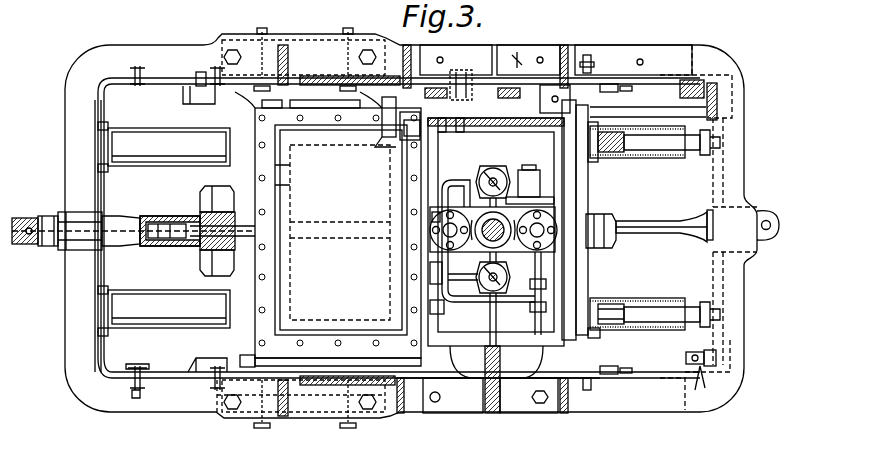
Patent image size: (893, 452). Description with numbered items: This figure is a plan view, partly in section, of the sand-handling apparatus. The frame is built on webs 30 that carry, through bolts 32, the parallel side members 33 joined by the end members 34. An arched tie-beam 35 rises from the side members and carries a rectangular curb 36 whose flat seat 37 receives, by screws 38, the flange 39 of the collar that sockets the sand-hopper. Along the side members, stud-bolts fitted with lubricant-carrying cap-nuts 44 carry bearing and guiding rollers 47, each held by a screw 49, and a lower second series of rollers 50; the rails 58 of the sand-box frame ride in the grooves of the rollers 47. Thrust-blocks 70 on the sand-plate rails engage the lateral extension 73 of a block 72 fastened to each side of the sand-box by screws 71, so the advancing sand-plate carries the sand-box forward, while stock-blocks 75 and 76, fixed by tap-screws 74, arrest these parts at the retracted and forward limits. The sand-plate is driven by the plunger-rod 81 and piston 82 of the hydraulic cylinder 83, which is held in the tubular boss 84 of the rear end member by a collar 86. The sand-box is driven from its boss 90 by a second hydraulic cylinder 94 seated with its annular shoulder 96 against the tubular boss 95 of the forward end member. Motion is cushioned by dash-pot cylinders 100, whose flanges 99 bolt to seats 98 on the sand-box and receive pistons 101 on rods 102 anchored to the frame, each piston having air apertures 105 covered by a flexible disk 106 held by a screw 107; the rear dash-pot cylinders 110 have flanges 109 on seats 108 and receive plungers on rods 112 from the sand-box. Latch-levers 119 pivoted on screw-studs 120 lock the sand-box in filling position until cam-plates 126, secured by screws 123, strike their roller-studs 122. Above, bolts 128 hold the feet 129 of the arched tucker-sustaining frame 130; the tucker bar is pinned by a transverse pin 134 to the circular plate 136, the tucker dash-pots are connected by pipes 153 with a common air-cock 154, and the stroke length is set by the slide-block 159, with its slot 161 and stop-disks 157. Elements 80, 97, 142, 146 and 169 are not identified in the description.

The webs 30 is at (240, 98).
The bolts 32 is at (232, 412).
The side members 33 is at (180, 93).
The end members 34 is at (80, 278).
The arched tie-beam 35 is at (338, 362).
The rectangular curb 36 is at (325, 100).
The flat seat 37 is at (266, 432).
The screws 38 is at (282, 267).
The flange 39 is at (282, 205).
The cap-nut 44 is at (265, 29).
The bearing and guiding roller 47 is at (146, 370).
The screw 49 is at (135, 372).
The guiding and supporting rollers 50 is at (273, 101).
The rails 58 is at (246, 362).
The thrust-blocks 70 is at (386, 100).
The screws 71 is at (466, 127).
The block 72 is at (444, 127).
The lateral extension 73 is at (436, 86).
The tap-screws 74 is at (465, 64).
The stock-block 75 is at (192, 104).
The stock-block 76 is at (515, 98).
The plate 80 is at (283, 182).
The plunger-rod 81 is at (200, 218).
The piston 82 is at (166, 218).
The hydraulic cylinder 83 is at (49, 246).
The tubular boss 84 is at (80, 222).
The collar 86 is at (58, 214).
The boss 90 is at (592, 214).
The hydraulic cylinder 94 is at (661, 227).
The tubular boss 95 is at (740, 212).
The annular shoulder 96 is at (707, 216).
The eye 97 is at (771, 223).
The projecting seats 98 is at (580, 160).
The flanges 99 is at (598, 334).
The dash-pot cylinders 100 is at (640, 158).
The pistons 101 is at (602, 304).
The rods 102 is at (700, 152).
The longitudinal apertures 105 is at (620, 128).
The disk 106 is at (600, 156).
The screw 107 is at (596, 128).
The projecting seats 108 is at (106, 172).
The flanges 109 is at (108, 128).
The dash-pot cylinders 110 is at (169, 228).
The rods 112 is at (400, 138).
The latch-levers 119 is at (612, 92).
The screw-studs 120 is at (634, 92).
The roller-studs 122 is at (586, 70).
The screws 123 is at (699, 350).
The cam-plates 126 is at (707, 382).
The bolts 128 is at (453, 395).
The feet 129 is at (529, 395).
The arched tucker-sustaining frame 130 is at (506, 140).
The transverse pin 134 is at (686, 356).
The circular plate 136 is at (482, 303).
The gauge 142 is at (484, 172).
The pipe 146 is at (445, 190).
The pipes 153 is at (520, 266).
The air-cock 154 is at (535, 322).
The stop-disks 157 is at (450, 203).
The slide-block 159 is at (466, 215).
The longitudinal slot 161 is at (500, 175).
The switch 169 is at (532, 190).